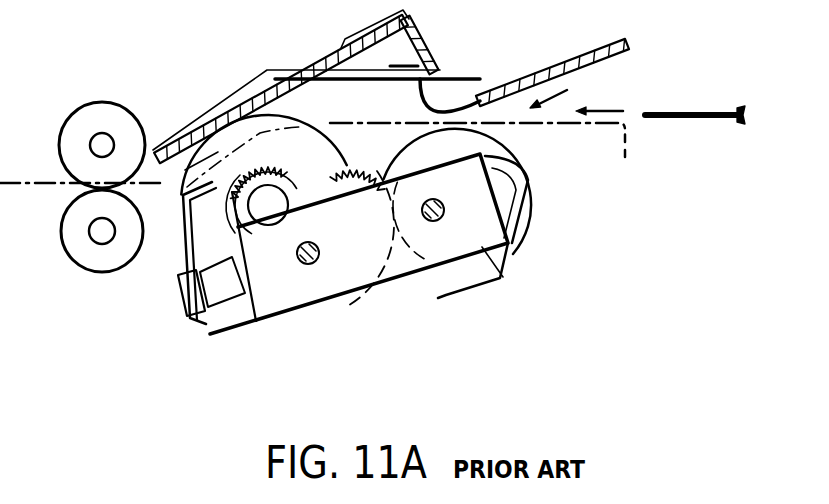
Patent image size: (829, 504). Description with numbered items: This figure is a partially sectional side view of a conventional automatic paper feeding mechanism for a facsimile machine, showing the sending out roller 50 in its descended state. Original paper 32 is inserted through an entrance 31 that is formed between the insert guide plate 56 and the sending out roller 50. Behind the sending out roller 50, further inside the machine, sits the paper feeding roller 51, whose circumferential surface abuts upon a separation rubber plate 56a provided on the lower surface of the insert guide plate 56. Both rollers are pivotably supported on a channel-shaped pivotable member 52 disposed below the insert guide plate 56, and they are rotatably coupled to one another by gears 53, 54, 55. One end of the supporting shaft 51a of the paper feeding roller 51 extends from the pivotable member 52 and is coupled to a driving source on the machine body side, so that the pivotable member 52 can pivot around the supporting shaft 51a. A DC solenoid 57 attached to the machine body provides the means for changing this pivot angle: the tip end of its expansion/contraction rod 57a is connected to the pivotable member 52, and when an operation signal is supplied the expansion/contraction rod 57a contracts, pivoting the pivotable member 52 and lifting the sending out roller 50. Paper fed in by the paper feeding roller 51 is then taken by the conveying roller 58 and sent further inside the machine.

The entrance 31 is at (576, 95).
The original paper 32 is at (696, 107).
The sending out roller 50 is at (528, 194).
The paper feeding roller 51 is at (175, 241).
The supporting shaft 51a is at (277, 212).
The pivotable member 52 is at (200, 324).
The gear 53 is at (233, 184).
The gear 54 is at (384, 301).
The gear 55 is at (507, 186).
The insert guide plate 56 is at (477, 69).
The separation rubber plate 56a is at (249, 90).
The DC solenoid 57 is at (456, 284).
The expansion/contraction rod 57a is at (272, 366).
The conveying roller 58 is at (98, 110).